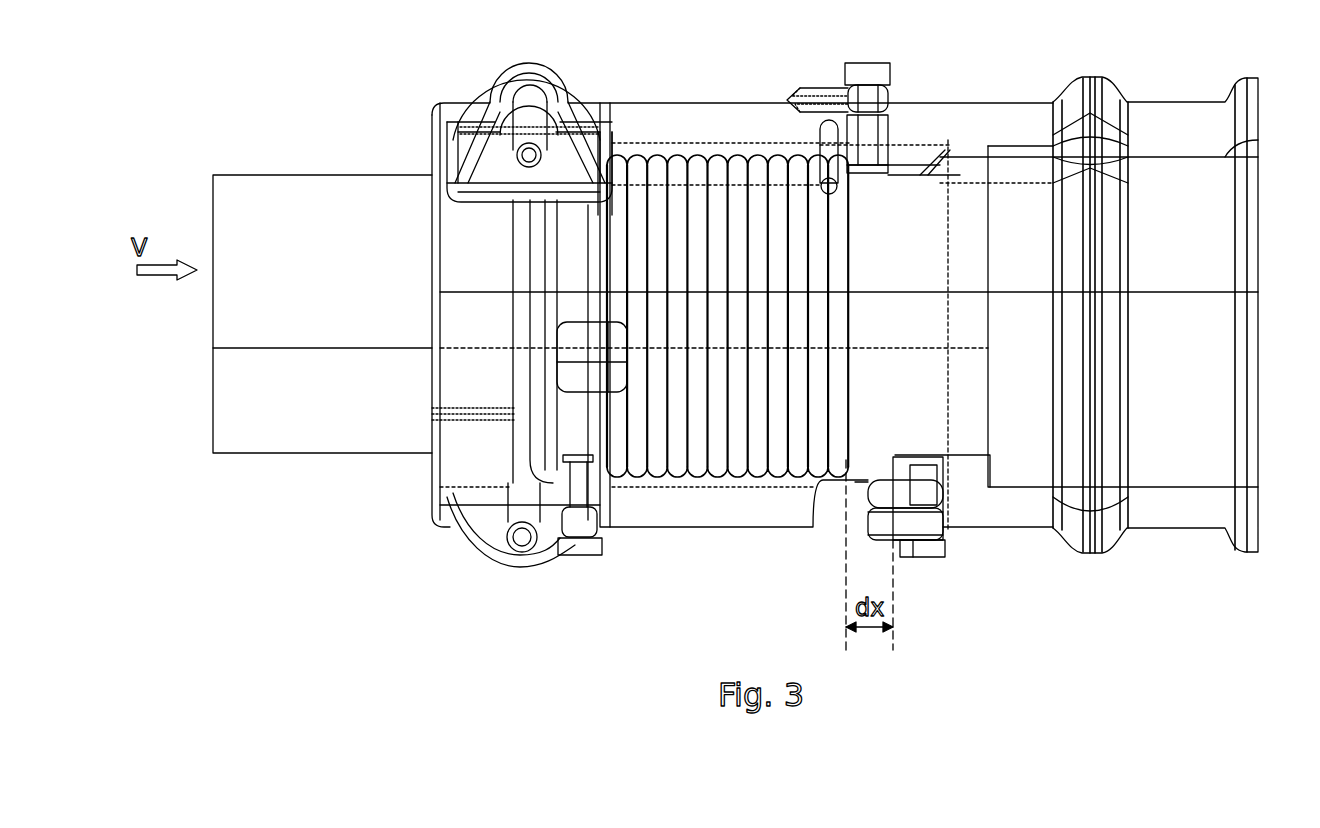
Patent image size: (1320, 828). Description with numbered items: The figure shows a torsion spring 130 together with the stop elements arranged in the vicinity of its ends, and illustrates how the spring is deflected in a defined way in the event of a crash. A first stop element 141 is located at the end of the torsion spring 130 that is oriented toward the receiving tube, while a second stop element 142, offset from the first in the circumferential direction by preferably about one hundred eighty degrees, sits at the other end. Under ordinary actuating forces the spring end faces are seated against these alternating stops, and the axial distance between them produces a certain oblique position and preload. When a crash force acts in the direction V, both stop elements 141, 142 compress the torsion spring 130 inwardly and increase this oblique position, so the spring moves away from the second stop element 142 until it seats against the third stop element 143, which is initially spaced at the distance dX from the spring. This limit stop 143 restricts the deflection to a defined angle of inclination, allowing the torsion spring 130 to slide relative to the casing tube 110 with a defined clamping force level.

The casing tube 110 is at (331, 185).
The torsion spring 130 is at (697, 163).
The first stop element 141 is at (875, 92).
The second stop element 142 is at (580, 548).
The third stop element 143 is at (932, 548).